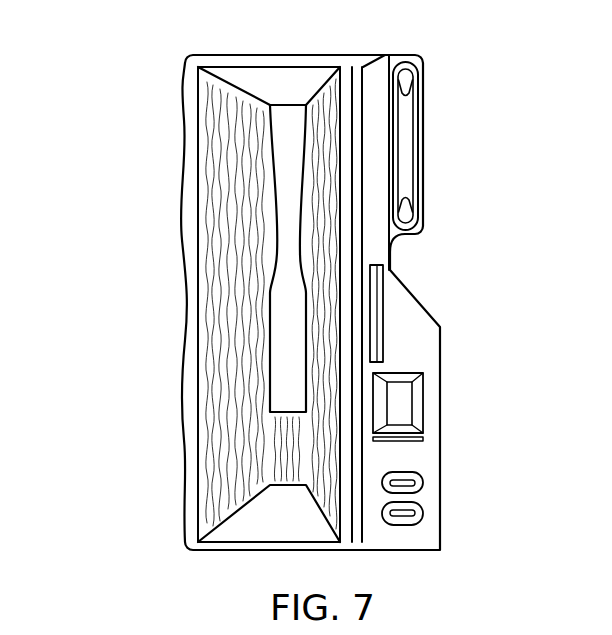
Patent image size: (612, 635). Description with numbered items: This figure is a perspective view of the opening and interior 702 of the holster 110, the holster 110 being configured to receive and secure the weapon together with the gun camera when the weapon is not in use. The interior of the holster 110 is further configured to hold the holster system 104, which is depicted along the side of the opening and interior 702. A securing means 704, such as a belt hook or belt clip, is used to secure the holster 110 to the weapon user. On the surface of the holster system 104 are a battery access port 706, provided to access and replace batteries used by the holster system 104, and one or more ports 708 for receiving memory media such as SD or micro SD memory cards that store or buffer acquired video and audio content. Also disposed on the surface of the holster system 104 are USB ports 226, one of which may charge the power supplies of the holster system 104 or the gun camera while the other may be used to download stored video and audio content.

The holster 110 is at (116, 35).
The holster system 104 is at (544, 234).
The opening and interior 702 is at (230, 193).
The securing means 704 is at (407, 177).
The ports for receiving memory media 708 is at (383, 310).
The battery access port 706 is at (405, 402).
The USB ports 226 is at (423, 512).